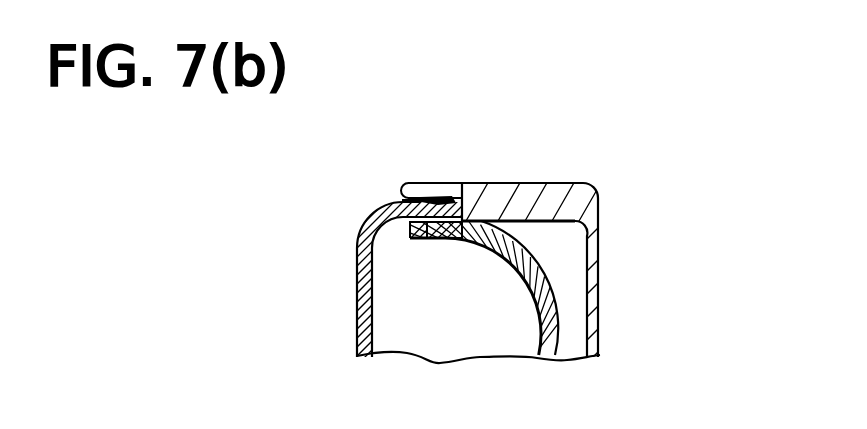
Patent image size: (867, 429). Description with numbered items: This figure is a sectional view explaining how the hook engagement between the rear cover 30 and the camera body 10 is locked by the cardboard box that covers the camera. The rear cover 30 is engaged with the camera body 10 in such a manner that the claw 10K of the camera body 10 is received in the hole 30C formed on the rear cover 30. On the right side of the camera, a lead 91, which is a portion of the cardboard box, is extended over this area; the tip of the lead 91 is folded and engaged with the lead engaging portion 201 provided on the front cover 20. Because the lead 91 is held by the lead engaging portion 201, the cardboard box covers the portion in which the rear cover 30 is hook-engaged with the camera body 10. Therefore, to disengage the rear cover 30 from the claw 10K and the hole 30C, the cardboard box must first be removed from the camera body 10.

The camera body 10 is at (551, 274).
The claw 10K is at (448, 228).
The front cover 20 is at (538, 179).
The lead engaging portion 201 is at (418, 184).
The rear cover 30 is at (346, 336).
The hole 30C is at (430, 224).
The lead 91 is at (357, 252).